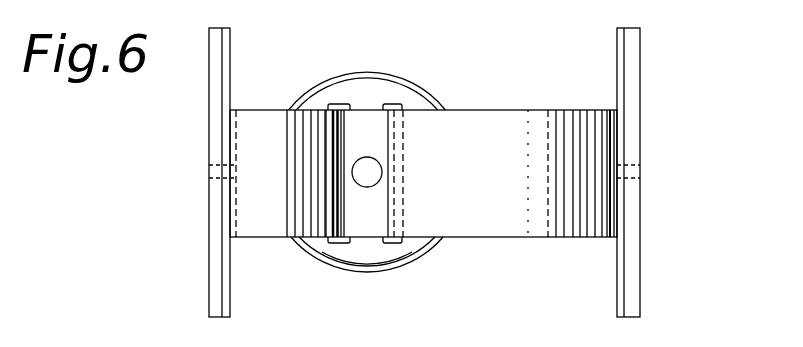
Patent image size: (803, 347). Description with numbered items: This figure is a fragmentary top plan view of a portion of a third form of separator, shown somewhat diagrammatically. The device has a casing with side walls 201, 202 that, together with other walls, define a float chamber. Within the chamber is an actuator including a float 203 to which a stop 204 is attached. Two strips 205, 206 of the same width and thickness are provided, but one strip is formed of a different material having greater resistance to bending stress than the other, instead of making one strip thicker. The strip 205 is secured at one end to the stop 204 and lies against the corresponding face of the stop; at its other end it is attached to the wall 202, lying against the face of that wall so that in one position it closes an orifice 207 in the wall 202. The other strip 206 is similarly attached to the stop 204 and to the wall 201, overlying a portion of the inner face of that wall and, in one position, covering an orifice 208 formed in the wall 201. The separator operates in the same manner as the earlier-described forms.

The side wall 201 is at (213, 284).
The side wall 202 is at (637, 258).
The float 203 is at (383, 260).
The stop 204 is at (373, 115).
The strip 205 is at (518, 117).
The strip 206 is at (262, 117).
The orifice 207 is at (638, 173).
The orifice 208 is at (213, 165).